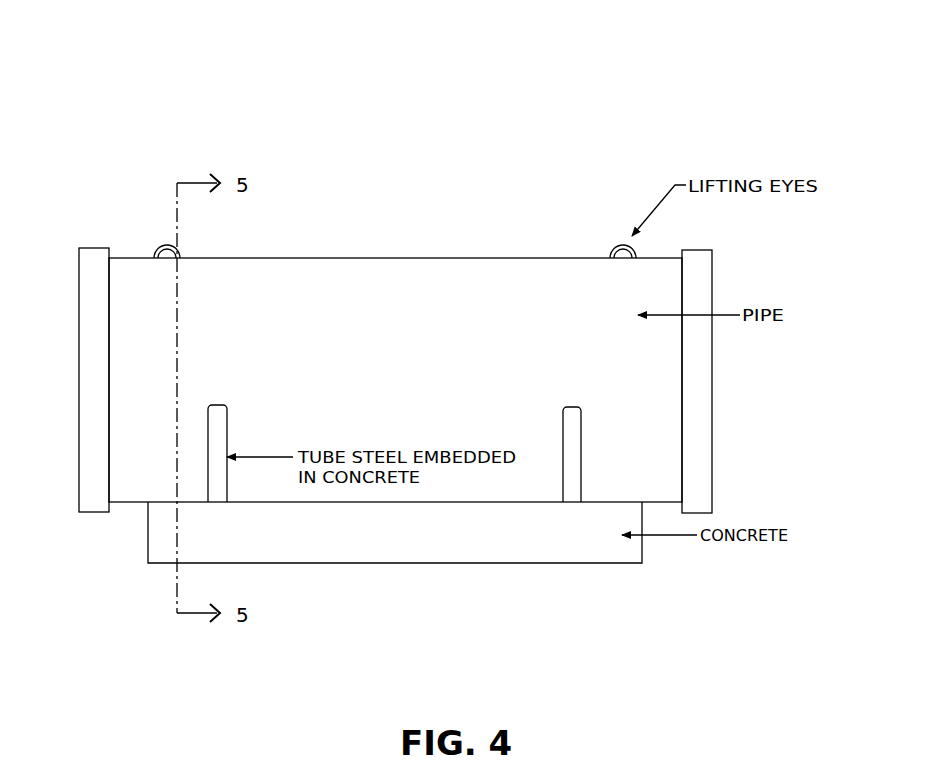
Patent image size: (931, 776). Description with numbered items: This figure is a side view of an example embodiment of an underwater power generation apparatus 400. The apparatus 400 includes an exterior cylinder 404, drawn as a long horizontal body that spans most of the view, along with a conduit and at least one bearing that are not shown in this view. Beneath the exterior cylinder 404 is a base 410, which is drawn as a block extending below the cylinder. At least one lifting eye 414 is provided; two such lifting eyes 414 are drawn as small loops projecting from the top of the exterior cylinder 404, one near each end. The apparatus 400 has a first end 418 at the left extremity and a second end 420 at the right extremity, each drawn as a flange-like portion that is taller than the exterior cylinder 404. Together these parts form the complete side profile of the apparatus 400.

The underwater power generation apparatus 400 is at (305, 78).
The exterior cylinder 404 is at (455, 258).
The base 410 is at (457, 537).
The lifting eye 414 is at (167, 237).
The first end 418 is at (72, 153).
The second end 420 is at (826, 268).